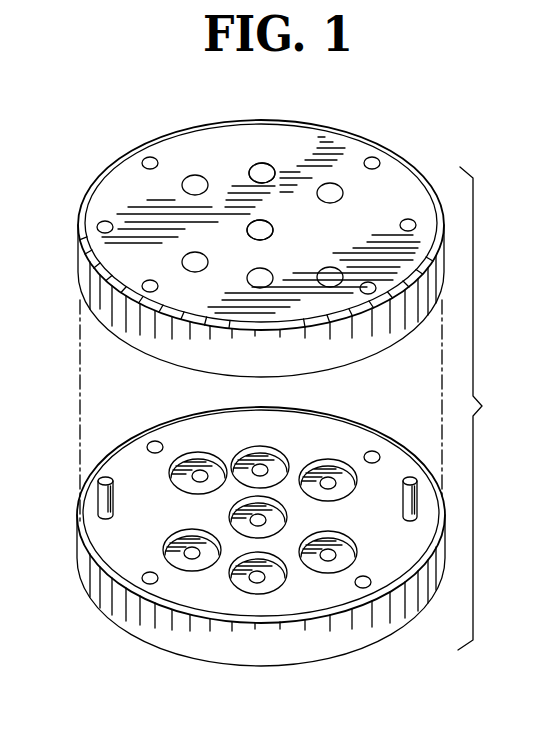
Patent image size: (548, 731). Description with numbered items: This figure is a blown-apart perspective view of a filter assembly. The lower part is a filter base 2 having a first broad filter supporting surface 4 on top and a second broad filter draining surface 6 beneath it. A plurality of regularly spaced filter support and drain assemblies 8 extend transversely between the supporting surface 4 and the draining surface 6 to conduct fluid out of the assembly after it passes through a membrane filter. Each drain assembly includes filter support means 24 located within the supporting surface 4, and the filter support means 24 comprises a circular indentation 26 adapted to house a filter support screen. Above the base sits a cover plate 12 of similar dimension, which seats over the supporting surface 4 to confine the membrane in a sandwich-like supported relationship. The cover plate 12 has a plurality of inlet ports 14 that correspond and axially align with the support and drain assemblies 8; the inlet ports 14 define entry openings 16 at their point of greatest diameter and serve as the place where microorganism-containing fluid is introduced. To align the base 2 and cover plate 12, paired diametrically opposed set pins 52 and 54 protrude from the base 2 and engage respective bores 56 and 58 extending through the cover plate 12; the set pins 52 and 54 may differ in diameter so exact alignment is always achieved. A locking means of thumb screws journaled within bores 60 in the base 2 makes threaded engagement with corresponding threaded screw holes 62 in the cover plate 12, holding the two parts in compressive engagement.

The filter base 2 is at (96, 594).
The filter supporting surface 4 is at (217, 598).
The filter draining surface 6 is at (182, 632).
The filter support and drain assemblies 8 is at (278, 592).
The cover plate 12 is at (365, 125).
The inlet ports 14 is at (253, 215).
The entry openings 16 is at (275, 172).
The filter support means 24 is at (158, 470).
The circular indentation 26 is at (170, 478).
The set pin 52 is at (418, 497).
The set pin 54 is at (98, 500).
The bore 56 is at (381, 162).
The bore 58 is at (103, 228).
The bores 60 is at (364, 588).
The threaded screw holes 62 is at (372, 290).